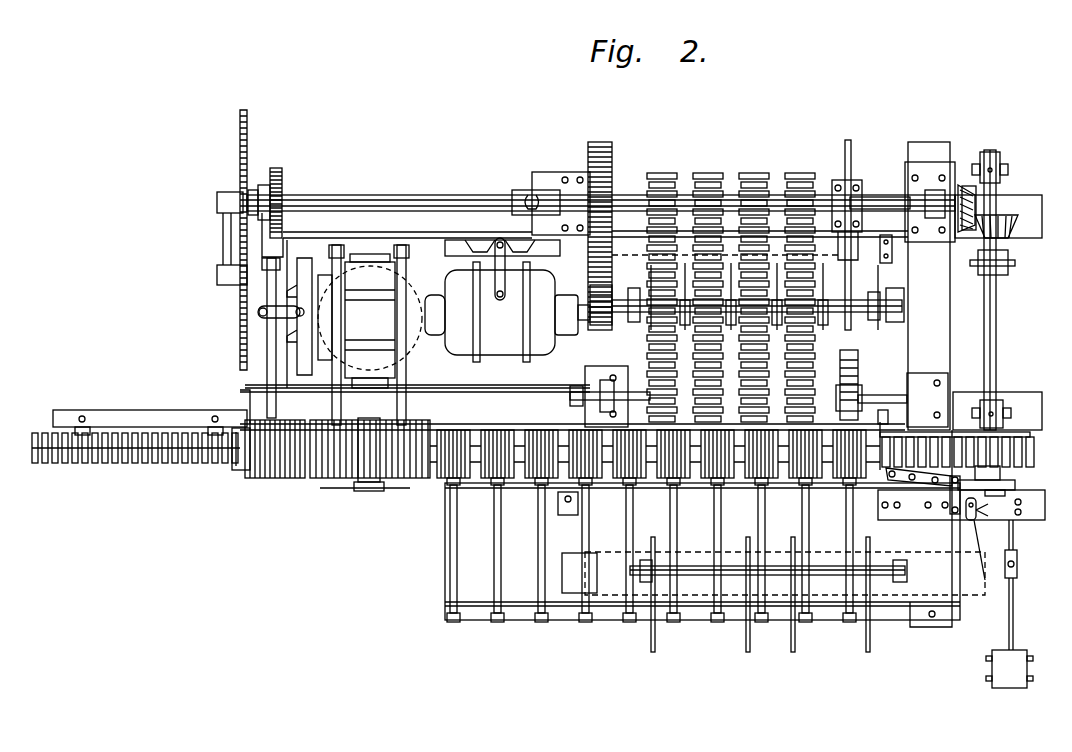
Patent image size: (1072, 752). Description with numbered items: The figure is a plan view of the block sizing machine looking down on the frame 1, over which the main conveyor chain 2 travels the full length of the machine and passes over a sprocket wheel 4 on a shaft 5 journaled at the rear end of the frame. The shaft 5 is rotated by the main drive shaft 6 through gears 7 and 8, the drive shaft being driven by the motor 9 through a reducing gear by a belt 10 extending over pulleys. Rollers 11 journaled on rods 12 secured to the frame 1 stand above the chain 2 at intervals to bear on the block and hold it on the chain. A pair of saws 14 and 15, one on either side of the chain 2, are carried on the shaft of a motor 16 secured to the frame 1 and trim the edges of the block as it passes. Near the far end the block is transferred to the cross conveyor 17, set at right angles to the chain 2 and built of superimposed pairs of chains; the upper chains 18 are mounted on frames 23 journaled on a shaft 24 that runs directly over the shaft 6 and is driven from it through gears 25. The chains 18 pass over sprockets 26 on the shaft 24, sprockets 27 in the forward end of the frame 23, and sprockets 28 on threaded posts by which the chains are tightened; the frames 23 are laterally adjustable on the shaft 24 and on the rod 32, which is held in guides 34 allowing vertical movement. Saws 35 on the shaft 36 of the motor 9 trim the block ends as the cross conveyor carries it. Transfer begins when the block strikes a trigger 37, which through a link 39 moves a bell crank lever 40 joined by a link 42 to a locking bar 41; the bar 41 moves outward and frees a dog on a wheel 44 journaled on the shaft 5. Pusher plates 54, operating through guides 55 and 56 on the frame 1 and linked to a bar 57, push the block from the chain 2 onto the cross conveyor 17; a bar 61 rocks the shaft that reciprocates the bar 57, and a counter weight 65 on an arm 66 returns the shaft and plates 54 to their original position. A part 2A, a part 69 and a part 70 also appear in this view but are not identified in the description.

The frame 1 is at (629, 384).
The main conveyor chain 2 is at (164, 452).
The shaft portion 2A is at (878, 198).
The sprocket wheel 4 is at (1030, 448).
The shaft 5 is at (993, 360).
The main drive shaft 6 is at (945, 196).
The gear 7 is at (977, 202).
The gear 8 is at (1010, 222).
The motor 9 is at (507, 300).
The belt 10 is at (605, 175).
The rollers 11 is at (283, 478).
The rods 12 is at (400, 388).
The saw 14 is at (410, 425).
The saw 15 is at (374, 491).
The motor 16 is at (384, 290).
The cross conveyor 17 is at (695, 286).
The chains 18 is at (798, 172).
The frames 23 is at (850, 392).
The shaft 24 is at (425, 192).
The gears 25 is at (283, 175).
The sprockets 26 is at (847, 180).
The sprockets 27 is at (874, 440).
The sprockets 28 is at (850, 372).
The rod 32 is at (632, 392).
The guides 34 is at (595, 388).
The saws 35 is at (628, 274).
The shaft 36 is at (612, 302).
The trigger 37 is at (892, 478).
The link 39 is at (915, 480).
The bell crank lever 40 is at (956, 514).
The locking bar 41 is at (985, 512).
The link 42 is at (987, 561).
The wheel 44 is at (1000, 486).
The pusher plates 54 is at (792, 640).
The guide 55 is at (832, 608).
The guide 56 is at (614, 495).
The bar 57 is at (690, 582).
The bar 61 is at (1013, 552).
The counter weight 65 is at (1018, 676).
The arm 66 is at (1013, 620).
The gear 69 is at (296, 478).
The block 70 is at (243, 478).